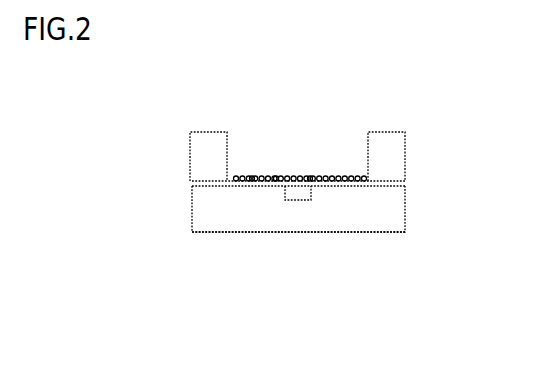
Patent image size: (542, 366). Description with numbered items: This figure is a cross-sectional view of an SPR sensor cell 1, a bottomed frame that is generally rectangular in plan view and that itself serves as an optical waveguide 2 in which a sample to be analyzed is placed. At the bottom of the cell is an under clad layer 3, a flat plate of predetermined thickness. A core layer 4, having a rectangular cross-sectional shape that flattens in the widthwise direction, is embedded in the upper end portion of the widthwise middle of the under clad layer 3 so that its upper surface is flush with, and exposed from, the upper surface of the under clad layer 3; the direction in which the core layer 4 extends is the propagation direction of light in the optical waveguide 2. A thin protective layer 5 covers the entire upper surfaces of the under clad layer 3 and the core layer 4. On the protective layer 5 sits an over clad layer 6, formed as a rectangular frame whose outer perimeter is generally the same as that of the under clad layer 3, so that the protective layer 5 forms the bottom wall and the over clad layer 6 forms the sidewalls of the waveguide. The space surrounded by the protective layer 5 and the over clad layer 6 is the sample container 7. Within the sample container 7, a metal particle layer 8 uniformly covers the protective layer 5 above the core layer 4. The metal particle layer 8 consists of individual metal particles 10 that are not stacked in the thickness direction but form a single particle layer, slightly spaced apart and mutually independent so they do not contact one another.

The SPR sensor cell 1 is at (298, 291).
The optical waveguide 2 is at (228, 228).
The under clad layer 3 is at (363, 218).
The core layer 4 is at (303, 193).
The protective layer 5 is at (405, 183).
The over clad layer 6 is at (403, 147).
The sample container 7 is at (335, 132).
The metal particle layer 8 is at (237, 180).
The metal particles 10 is at (252, 178).